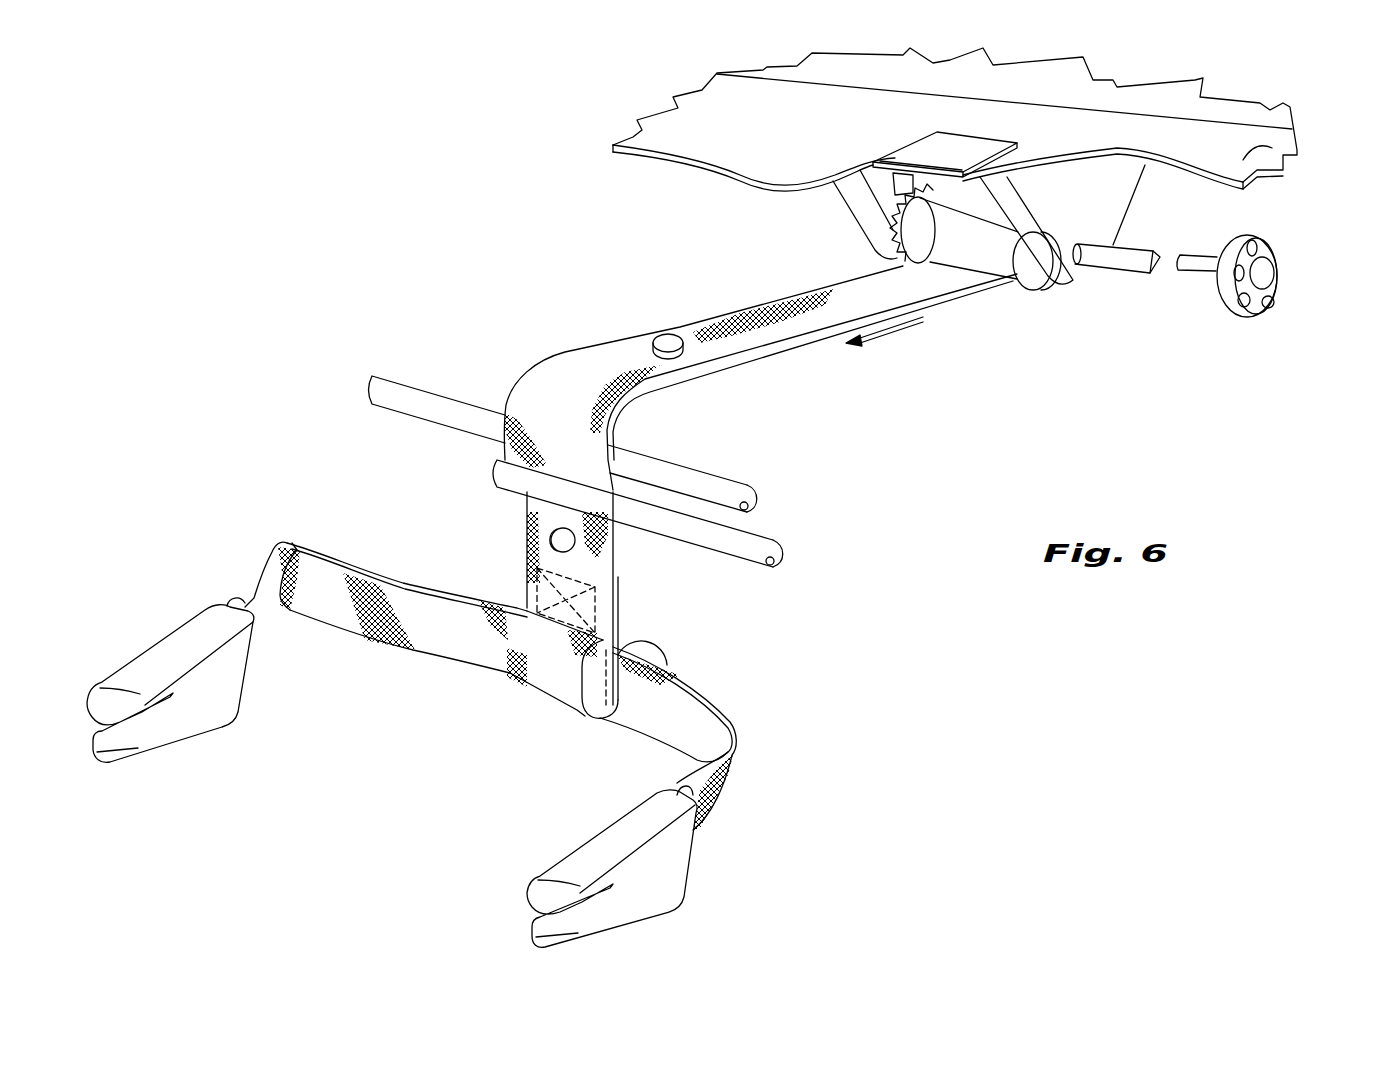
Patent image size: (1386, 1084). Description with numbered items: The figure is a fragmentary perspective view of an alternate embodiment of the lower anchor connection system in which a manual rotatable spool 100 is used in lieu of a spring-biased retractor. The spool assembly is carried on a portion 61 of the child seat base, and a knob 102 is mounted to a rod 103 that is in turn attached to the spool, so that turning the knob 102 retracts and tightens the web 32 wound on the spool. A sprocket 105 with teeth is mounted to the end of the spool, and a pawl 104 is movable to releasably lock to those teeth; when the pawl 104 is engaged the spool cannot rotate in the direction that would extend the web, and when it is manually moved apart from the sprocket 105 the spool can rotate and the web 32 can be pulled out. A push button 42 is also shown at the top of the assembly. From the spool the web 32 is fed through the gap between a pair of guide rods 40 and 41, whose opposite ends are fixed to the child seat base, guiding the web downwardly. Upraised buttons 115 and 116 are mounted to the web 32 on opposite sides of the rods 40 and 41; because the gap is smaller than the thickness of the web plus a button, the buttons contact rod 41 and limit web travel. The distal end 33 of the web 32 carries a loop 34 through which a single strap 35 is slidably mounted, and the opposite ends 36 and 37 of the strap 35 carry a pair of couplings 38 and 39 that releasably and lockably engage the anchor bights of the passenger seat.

The web 32 is at (601, 358).
The distal end of web 33 is at (665, 677).
The loop 34 is at (527, 672).
The strap 35 is at (368, 642).
The end of strap 36 is at (272, 578).
The end of strap 37 is at (733, 790).
The coupling 38 is at (152, 670).
The coupling 39 is at (643, 880).
The guide rod 40 is at (716, 484).
The guide rod 41 is at (758, 548).
The push button 42 is at (892, 158).
The portion of child seat base 61 is at (1290, 160).
The manual rotatable spool 100 is at (750, 229).
The knob 102 is at (1280, 273).
The rod 103 is at (1090, 272).
The pawl 104 is at (998, 207).
The sprocket 105 is at (890, 232).
The upraised button 115 is at (671, 338).
The upraised button 116 is at (555, 540).